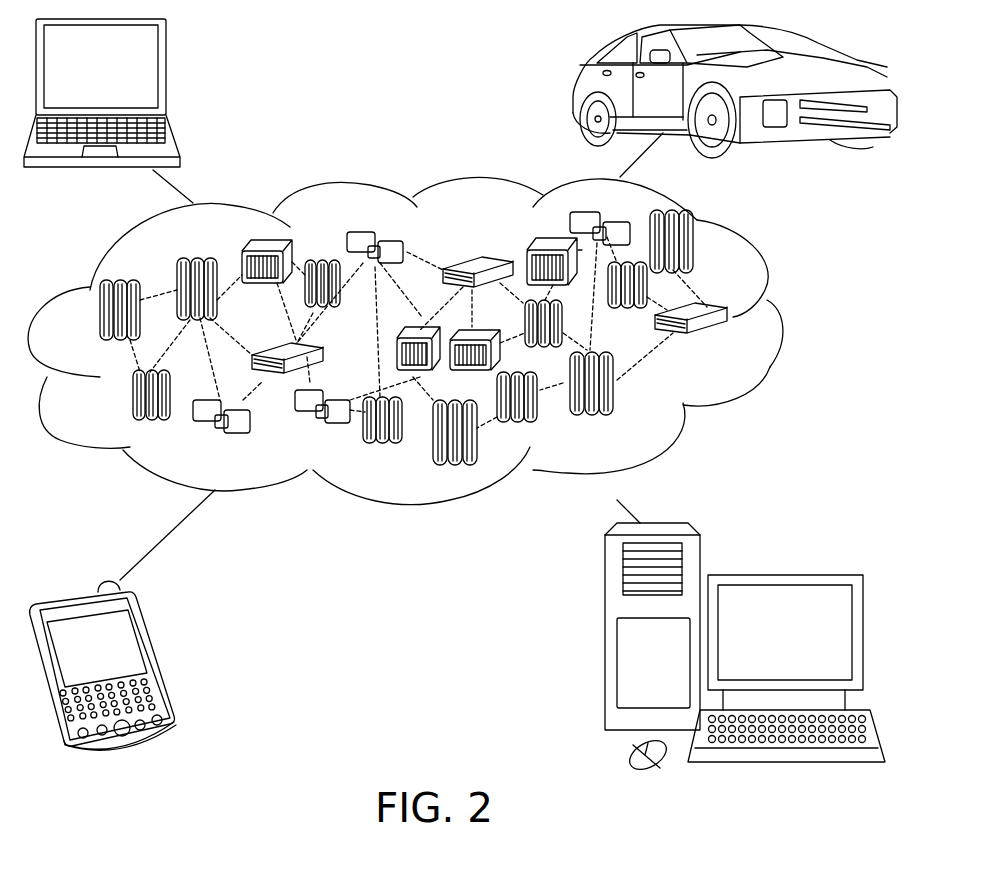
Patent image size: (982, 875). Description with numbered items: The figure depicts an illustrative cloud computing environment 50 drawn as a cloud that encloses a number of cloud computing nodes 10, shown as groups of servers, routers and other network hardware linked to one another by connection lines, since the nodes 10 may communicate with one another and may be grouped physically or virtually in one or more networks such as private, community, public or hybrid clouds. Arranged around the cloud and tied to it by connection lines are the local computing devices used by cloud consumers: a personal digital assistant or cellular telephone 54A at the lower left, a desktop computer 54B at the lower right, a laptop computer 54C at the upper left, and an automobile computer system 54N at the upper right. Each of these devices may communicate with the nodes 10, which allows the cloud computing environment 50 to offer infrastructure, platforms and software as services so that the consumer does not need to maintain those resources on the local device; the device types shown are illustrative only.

The cloud computing nodes 10 is at (730, 343).
The cloud computing environment 50 is at (775, 314).
The personal digital assistant (PDA) or cellular telephone 54A is at (157, 658).
The desktop computer 54B is at (782, 575).
The laptop computer 54C is at (166, 75).
The automobile computer system 54N is at (575, 88).